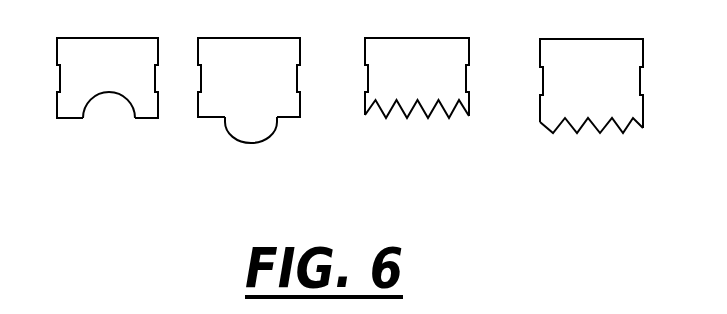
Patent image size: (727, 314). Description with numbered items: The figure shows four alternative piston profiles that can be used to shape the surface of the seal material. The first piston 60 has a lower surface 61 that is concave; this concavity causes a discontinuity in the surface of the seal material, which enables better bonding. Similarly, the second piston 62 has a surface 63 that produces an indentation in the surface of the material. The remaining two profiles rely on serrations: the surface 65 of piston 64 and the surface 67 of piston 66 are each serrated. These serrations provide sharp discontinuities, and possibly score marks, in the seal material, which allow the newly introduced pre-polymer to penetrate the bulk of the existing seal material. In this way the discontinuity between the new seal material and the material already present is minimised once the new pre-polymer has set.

The piston 60 is at (128, 64).
The lower surface 61 is at (88, 103).
The piston 62 is at (273, 65).
The surface 63 is at (225, 123).
The piston 64 is at (438, 65).
The surface 65 is at (412, 115).
The piston 66 is at (617, 67).
The surface 67 is at (600, 132).